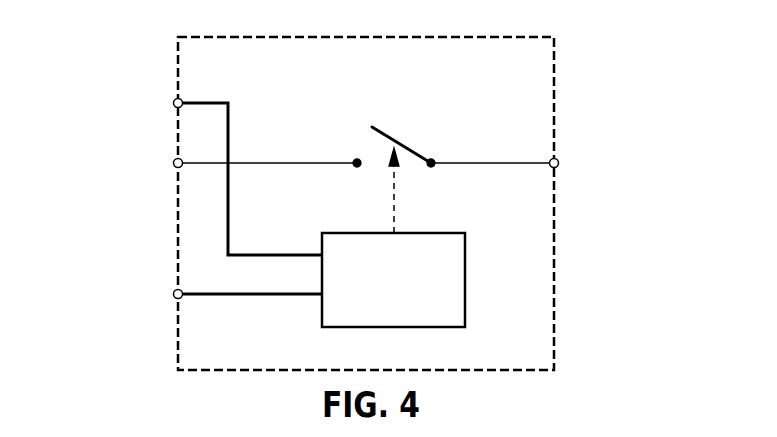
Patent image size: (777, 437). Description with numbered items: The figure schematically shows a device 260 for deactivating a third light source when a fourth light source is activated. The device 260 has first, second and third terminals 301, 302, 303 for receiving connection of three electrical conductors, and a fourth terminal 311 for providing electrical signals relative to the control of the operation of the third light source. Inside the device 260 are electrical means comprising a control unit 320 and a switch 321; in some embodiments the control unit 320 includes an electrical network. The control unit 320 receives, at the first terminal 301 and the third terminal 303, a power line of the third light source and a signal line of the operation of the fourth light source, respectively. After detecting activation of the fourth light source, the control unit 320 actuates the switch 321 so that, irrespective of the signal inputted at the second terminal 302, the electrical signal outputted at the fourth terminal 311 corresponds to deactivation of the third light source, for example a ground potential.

The device 260 is at (558, 279).
The first terminal 301 is at (173, 100).
The second terminal 302 is at (172, 164).
The third terminal 303 is at (172, 292).
The fourth terminal 311 is at (562, 157).
The control unit 320 is at (445, 299).
The switch 321 is at (404, 137).